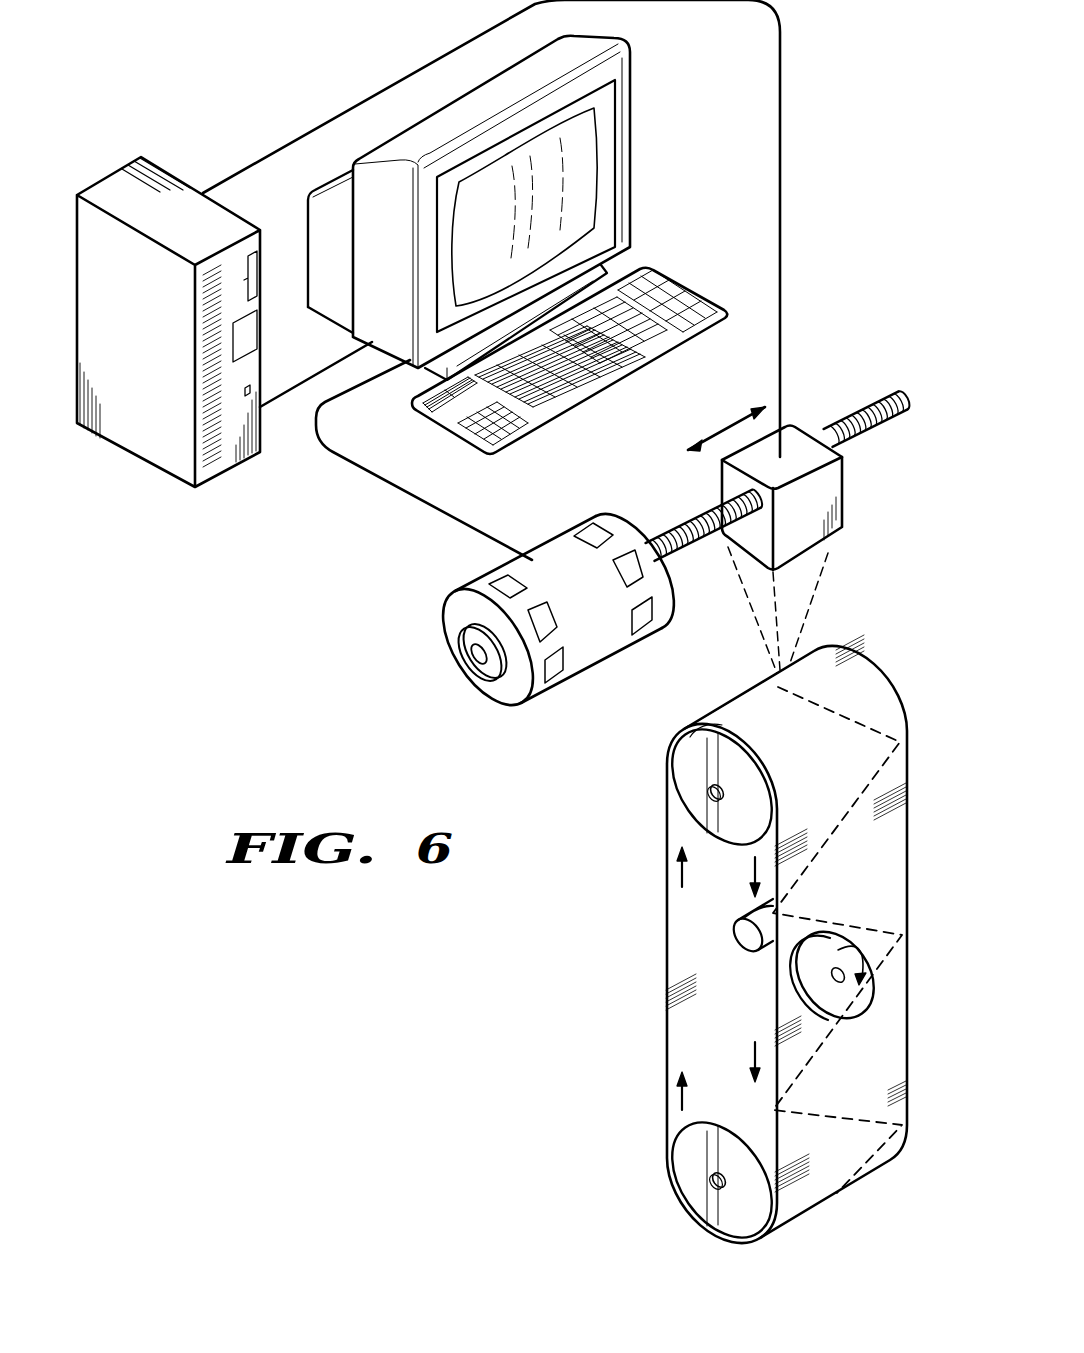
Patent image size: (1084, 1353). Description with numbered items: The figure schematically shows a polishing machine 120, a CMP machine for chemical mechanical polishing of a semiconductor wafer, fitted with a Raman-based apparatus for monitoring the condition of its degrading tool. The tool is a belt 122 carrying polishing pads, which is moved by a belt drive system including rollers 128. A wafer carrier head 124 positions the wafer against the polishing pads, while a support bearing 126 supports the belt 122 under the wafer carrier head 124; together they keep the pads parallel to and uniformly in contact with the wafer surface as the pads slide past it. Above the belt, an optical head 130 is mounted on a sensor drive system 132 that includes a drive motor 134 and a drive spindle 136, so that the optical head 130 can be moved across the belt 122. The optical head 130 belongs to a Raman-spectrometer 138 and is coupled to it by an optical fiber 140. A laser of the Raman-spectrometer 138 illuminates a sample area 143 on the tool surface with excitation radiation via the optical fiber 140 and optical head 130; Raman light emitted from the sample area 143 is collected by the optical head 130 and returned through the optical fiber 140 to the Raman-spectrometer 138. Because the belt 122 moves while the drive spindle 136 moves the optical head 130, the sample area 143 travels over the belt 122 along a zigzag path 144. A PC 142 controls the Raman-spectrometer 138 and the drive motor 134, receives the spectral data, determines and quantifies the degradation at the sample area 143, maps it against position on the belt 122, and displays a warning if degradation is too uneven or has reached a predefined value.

The polishing machine 120 is at (625, 955).
The belt 122 is at (906, 845).
The wafer carrier head 124 is at (853, 1000).
The support bearing 126 is at (737, 929).
The rollers 128 is at (676, 767).
The optical head 130 is at (843, 493).
The sensor drive system 132 is at (549, 610).
The drive motor 134 is at (484, 697).
The drive spindle 136 is at (903, 401).
The Raman-spectrometer 138 is at (137, 455).
The optical fiber 140 is at (782, 246).
The PC 142 is at (632, 148).
The sample area 143 is at (752, 682).
The path 144 is at (848, 826).